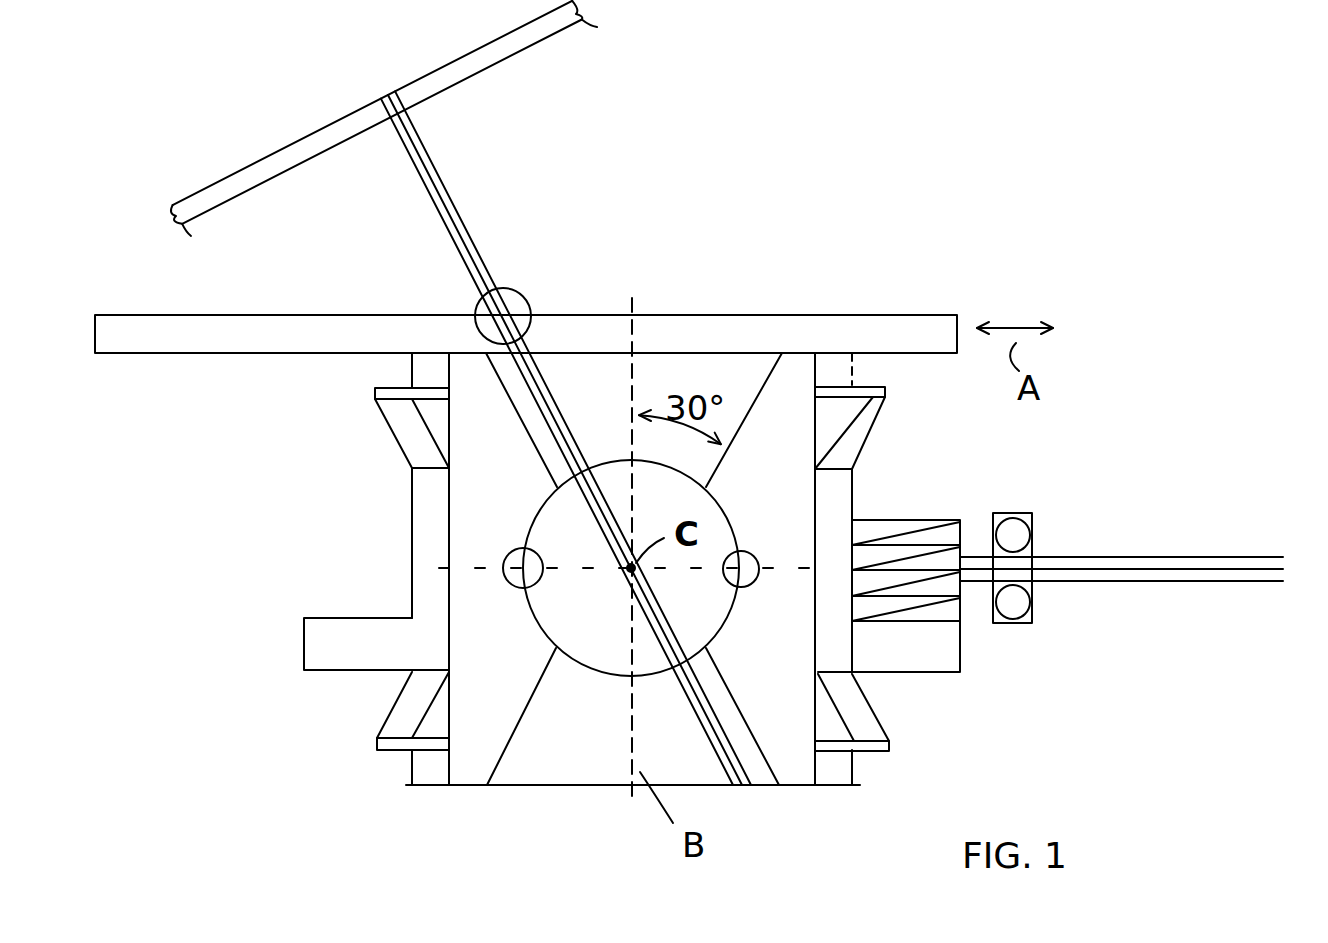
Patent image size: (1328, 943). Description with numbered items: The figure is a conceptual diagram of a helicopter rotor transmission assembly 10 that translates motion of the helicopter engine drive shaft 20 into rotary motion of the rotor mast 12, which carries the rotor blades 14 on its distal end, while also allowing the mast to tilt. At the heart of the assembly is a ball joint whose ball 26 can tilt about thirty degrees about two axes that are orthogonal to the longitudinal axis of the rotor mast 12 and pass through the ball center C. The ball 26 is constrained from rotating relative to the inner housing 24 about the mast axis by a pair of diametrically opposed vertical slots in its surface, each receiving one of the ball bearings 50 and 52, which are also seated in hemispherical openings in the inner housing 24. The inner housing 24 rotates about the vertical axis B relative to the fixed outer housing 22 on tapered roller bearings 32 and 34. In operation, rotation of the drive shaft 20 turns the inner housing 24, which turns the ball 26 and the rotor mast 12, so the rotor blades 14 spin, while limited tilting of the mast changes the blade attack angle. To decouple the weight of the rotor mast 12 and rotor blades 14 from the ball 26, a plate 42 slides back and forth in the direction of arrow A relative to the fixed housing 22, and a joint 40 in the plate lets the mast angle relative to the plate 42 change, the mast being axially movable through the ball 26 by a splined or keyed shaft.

The helicopter rotor transmission assembly 10 is at (689, 400).
The rotor mast 12 is at (448, 184).
The rotor blades 14 is at (488, 72).
The helicopter engine drive shaft 20 is at (1113, 552).
The fixed outer housing 22 is at (950, 660).
The inner housing 24 is at (793, 503).
The ball 26 is at (717, 621).
The tapered roller bearing 32 is at (870, 416).
The tapered roller bearing 34 is at (871, 725).
The joint 40 is at (517, 293).
The plate 42 is at (903, 320).
The ball bearing 50 is at (747, 559).
The ball bearing 52 is at (509, 557).